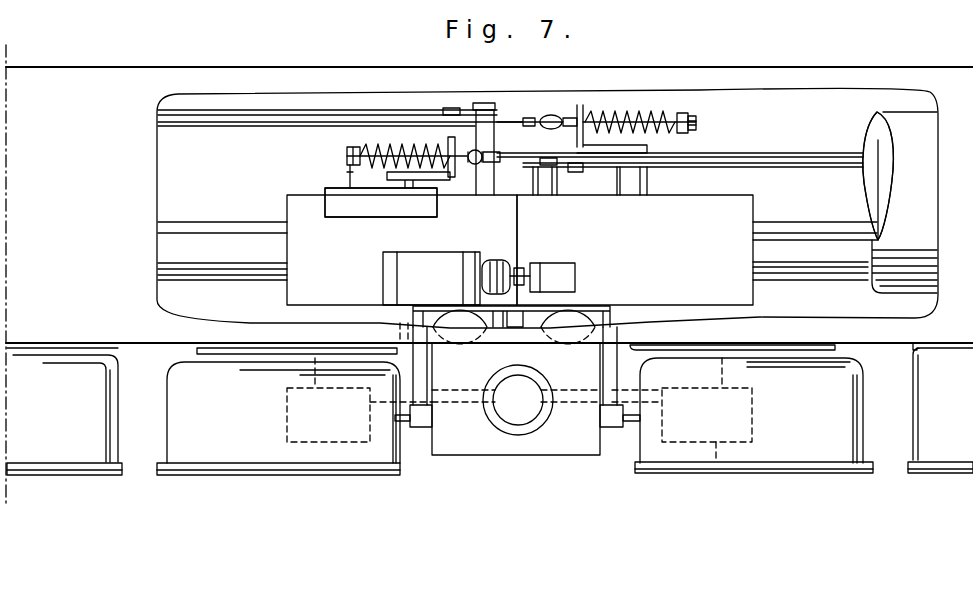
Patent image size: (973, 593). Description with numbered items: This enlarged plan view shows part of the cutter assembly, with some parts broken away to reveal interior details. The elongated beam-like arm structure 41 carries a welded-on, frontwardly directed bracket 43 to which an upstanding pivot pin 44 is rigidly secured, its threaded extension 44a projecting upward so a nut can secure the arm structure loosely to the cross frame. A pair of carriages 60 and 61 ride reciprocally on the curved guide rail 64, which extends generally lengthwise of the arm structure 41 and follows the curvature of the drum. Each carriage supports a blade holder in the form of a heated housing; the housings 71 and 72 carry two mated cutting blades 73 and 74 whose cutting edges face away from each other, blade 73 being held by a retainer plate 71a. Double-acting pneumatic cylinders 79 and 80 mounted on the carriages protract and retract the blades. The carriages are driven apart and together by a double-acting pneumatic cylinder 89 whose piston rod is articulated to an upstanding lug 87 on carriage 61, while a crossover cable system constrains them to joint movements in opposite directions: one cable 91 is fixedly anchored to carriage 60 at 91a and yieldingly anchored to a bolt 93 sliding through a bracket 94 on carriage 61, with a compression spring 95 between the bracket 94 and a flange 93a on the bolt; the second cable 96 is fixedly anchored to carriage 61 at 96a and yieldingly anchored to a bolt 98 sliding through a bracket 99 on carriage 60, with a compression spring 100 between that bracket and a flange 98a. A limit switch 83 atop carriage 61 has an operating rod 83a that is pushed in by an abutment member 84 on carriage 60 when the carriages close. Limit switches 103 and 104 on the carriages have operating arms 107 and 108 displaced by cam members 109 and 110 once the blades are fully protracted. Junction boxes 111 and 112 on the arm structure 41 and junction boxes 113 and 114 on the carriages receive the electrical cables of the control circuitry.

The arm structure 41 is at (75, 85).
The second cable 96 is at (332, 108).
The anchor point of second cable 96a is at (488, 103).
The compression spring 95 is at (410, 145).
The bolt 93 is at (362, 171).
The flange or shoulder structure 93a is at (357, 147).
The bracket 94 is at (452, 177).
The upstanding rigid bracket or lug 87 is at (342, 217).
The carriage 61 is at (293, 212).
The carriage 60 is at (742, 210).
The limit switch 83 is at (413, 262).
The operating rod 83a is at (522, 268).
The lug or abutment member 84 is at (540, 263).
The bracket 99 is at (578, 103).
The bolt 98 is at (646, 112).
The compression spring 100 is at (672, 113).
The shoulder or flange structure 98a is at (690, 109).
The cable 91 is at (818, 155).
The anchor point of cable 91a is at (553, 181).
The double-acting pneumatic cylinder 89 is at (893, 112).
The curved track or guide rail 64 is at (820, 240).
The double-acting pneumatic cylinder 80 is at (456, 315).
The double-acting pneumatic cylinder 79 is at (584, 315).
The blade holder 72 is at (440, 390).
The cutting blade 73 is at (548, 379).
The bracket 43 is at (478, 452).
The upstanding pivot pin or bolt 44 is at (545, 418).
The threaded extension 44a is at (525, 415).
The cutting blade 74 is at (500, 410).
The retainer plate 71a is at (595, 405).
The operating arm 108 is at (408, 428).
The cam member 110 is at (425, 430).
The cam member 109 is at (615, 430).
The operating arm 107 is at (645, 428).
The limit switch 104 is at (310, 442).
The blade holder 71 is at (620, 393).
The limit switch 103 is at (717, 462).
The junction box 112 is at (70, 455).
The junction box 114 is at (211, 450).
The junction box 113 is at (792, 447).
The junction box 111 is at (945, 447).